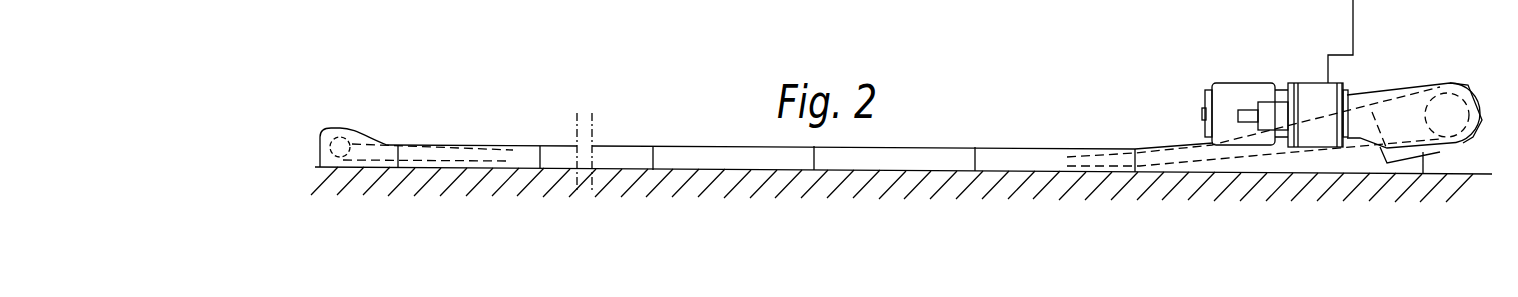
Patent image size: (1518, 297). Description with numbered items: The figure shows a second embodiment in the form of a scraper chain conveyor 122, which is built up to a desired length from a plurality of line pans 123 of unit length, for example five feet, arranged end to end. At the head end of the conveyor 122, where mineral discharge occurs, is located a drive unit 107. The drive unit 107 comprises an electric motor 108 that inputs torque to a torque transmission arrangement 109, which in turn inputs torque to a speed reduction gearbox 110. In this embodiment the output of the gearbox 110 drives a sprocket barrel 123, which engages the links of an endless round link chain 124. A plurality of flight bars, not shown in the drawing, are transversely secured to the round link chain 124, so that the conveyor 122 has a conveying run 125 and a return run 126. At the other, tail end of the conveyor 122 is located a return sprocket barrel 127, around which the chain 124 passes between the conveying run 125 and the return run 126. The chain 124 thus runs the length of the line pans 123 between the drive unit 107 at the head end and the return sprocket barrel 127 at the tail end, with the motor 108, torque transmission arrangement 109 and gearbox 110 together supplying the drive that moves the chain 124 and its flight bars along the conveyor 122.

The scraper chain conveyor 122 is at (934, 136).
The endless round link chain 124 is at (508, 139).
The conveying run 125 is at (433, 148).
The return run 126 is at (470, 162).
The return sprocket barrel 127 is at (344, 140).
The drive unit 107 is at (1265, 72).
The electric motor 108 is at (1220, 90).
The torque transmission arrangement 109 is at (1312, 93).
The speed reduction gearbox 110 is at (1387, 90).
The sprocket barrel 123 is at (1453, 110).